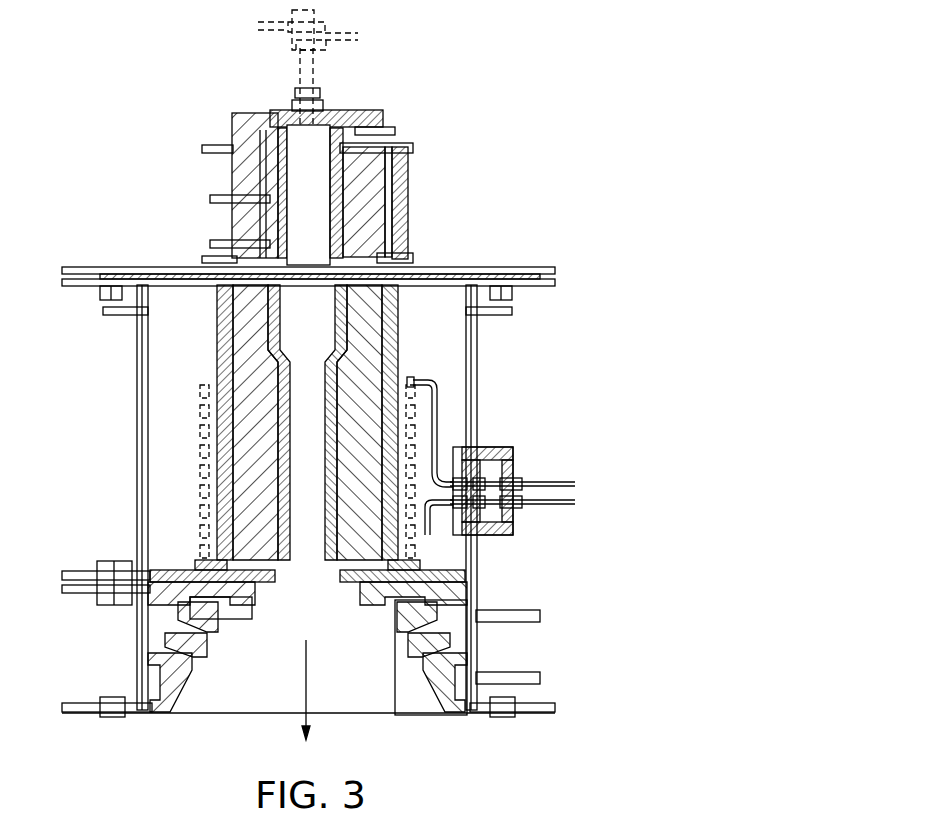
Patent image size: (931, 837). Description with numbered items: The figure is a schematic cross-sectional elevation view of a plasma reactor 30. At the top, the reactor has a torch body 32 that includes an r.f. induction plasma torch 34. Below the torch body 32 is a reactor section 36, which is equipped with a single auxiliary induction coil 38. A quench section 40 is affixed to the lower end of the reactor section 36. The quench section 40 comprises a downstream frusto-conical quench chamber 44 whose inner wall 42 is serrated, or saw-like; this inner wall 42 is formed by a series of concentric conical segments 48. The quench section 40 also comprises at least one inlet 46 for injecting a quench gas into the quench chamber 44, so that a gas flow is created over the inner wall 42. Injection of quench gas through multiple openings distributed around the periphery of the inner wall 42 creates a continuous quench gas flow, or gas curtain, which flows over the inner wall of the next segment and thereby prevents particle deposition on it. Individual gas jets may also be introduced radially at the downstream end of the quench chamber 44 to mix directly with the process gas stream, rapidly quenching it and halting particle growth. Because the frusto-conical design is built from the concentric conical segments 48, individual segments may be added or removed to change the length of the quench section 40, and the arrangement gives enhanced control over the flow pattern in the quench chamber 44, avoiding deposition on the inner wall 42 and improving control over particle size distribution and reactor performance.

The plasma reactor 30 is at (561, 63).
The torch body 32 is at (406, 210).
The r.f. induction plasma torch 34 is at (260, 180).
The reactor section 36 is at (481, 390).
The auxiliary induction coil 38 is at (575, 500).
The quench section 40 is at (138, 678).
The inner wall 42 is at (228, 616).
The quench chamber 44 is at (323, 668).
The inlet 46 is at (543, 620).
The concentric conical segments 48 is at (392, 614).